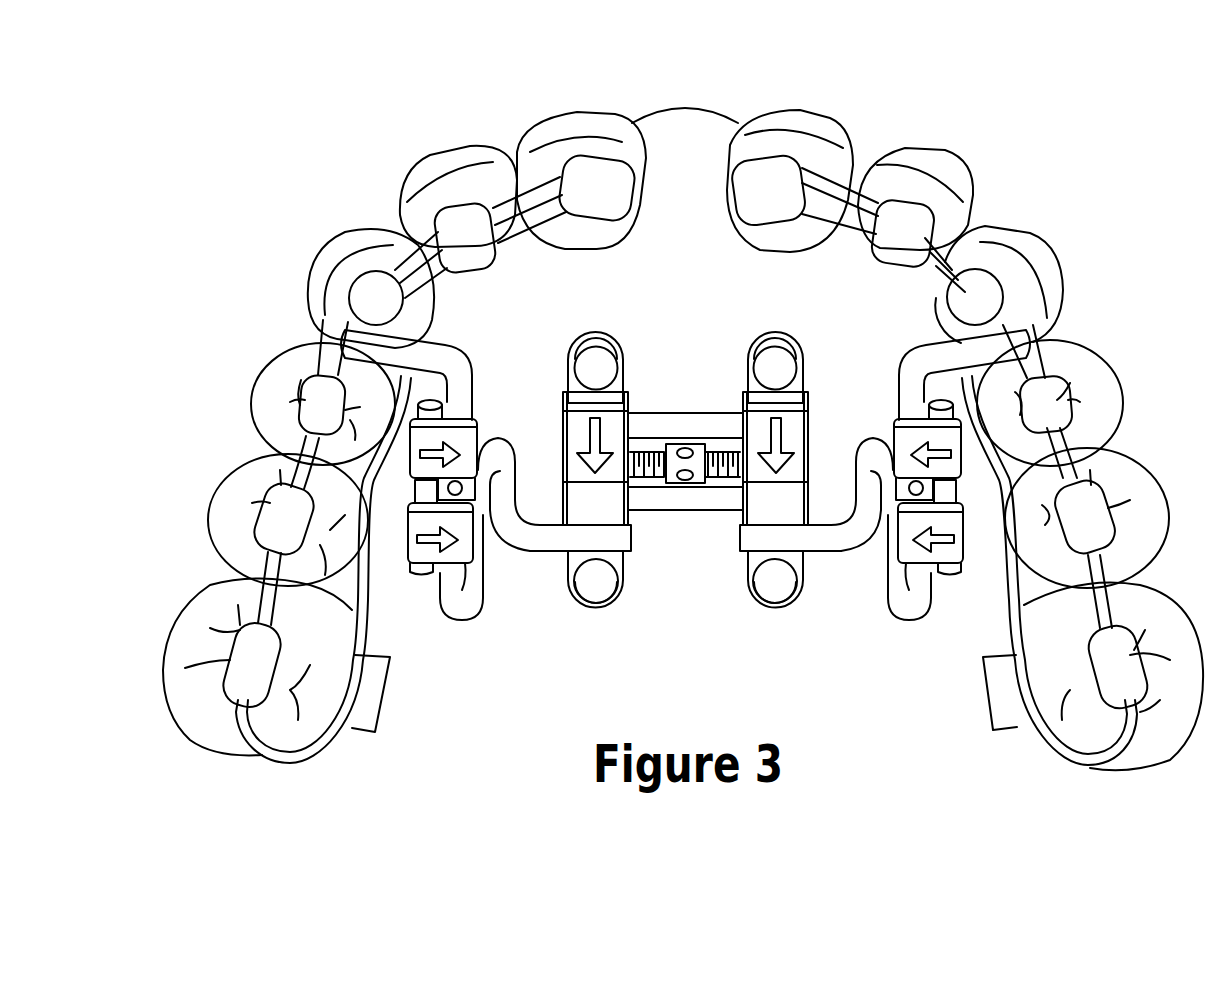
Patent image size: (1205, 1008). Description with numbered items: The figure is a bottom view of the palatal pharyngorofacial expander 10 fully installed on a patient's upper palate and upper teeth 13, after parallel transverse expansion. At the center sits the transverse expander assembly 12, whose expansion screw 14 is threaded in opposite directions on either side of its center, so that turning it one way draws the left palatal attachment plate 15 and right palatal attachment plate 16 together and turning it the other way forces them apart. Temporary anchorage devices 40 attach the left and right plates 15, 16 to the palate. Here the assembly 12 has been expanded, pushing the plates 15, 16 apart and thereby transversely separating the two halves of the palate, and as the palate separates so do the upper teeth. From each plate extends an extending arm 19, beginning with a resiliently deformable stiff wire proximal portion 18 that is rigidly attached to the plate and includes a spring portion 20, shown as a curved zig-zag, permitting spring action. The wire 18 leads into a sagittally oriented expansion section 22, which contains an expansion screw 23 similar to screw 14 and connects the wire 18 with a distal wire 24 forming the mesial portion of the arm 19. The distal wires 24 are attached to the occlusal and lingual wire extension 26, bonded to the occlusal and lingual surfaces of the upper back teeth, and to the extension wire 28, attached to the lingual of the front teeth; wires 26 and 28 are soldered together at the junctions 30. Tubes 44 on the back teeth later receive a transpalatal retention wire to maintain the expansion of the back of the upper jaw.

The palatal pharyngorofacial expander 10 is at (488, 113).
The transverse expander assembly 12 is at (685, 402).
The teeth 13 is at (1040, 236).
The expansion screw 14 is at (688, 484).
The left palatal attachment plate 15 is at (597, 333).
The right palatal attachment plate 16 is at (778, 333).
The stiff wire proximal portion 18 is at (548, 553).
The extending arm 19 is at (438, 620).
The spring portion 20 is at (484, 612).
The sagittal expansion section 22 is at (490, 428).
The expansion screw 23 is at (501, 472).
The distal wire 24 is at (445, 347).
The occlusal and lingual wire extension 26 is at (262, 573).
The extension wire 28 is at (543, 248).
The junction 30 is at (432, 302).
The temporary anchorage device 40 is at (622, 352).
The tube 44 is at (390, 716).